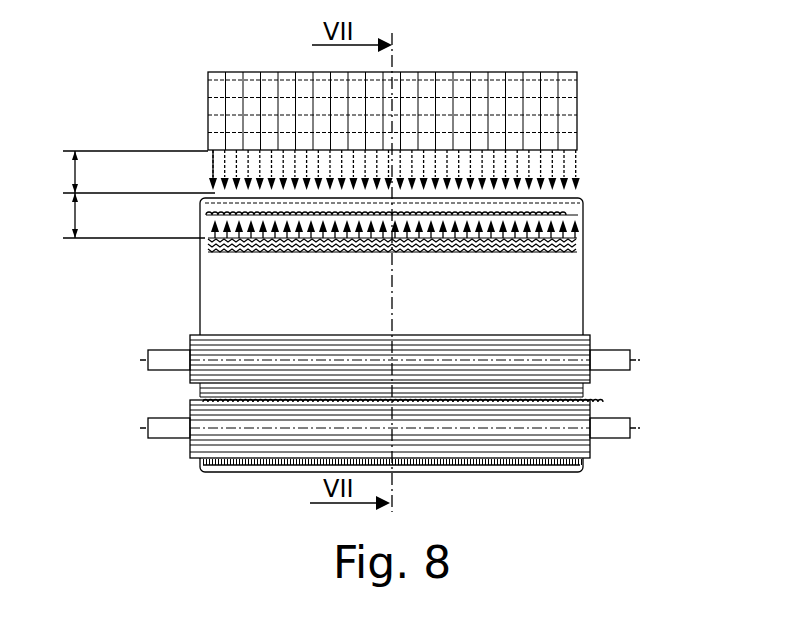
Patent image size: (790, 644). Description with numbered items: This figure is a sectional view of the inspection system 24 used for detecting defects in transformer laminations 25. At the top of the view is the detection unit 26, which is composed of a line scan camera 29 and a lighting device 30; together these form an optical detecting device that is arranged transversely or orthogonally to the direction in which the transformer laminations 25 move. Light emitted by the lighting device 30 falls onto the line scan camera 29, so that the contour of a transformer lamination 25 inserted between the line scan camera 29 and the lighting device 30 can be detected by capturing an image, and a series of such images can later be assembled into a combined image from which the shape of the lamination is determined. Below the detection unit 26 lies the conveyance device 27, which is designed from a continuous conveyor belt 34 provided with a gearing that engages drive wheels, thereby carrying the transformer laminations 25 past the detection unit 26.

The inspection system 24 is at (117, 68).
The detection unit 26 is at (556, 67).
The line scan camera 29 is at (552, 110).
The transformer laminations 25 is at (567, 181).
The lighting device 30 is at (577, 238).
The conveyor belt 34 is at (568, 280).
The conveyance device 27 is at (593, 317).